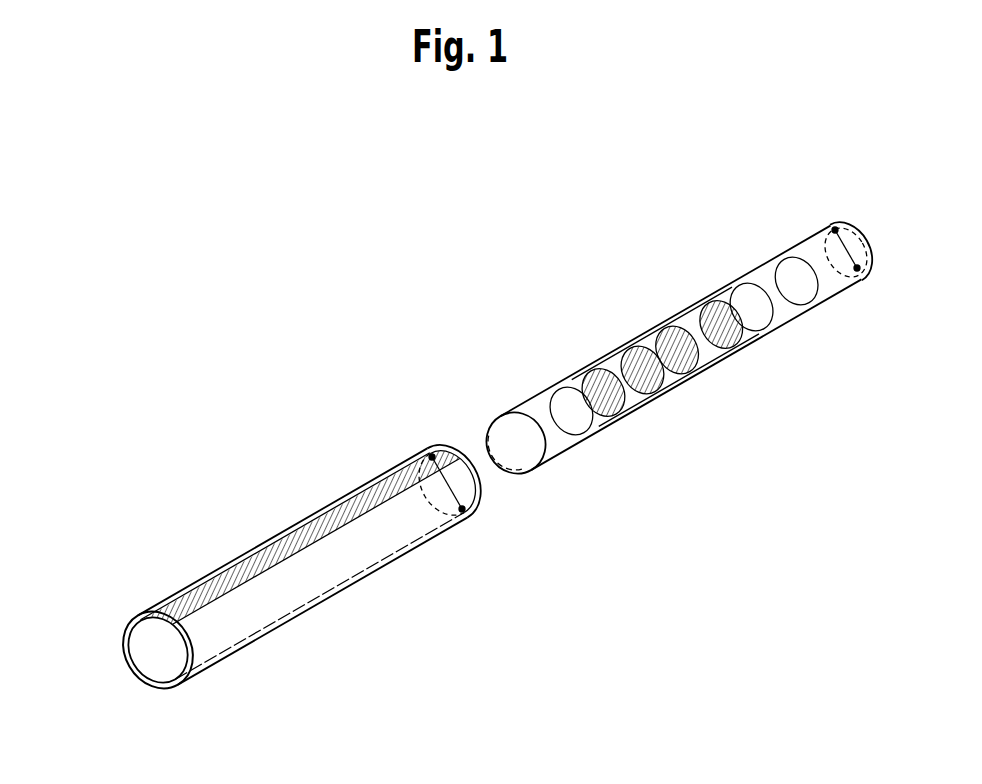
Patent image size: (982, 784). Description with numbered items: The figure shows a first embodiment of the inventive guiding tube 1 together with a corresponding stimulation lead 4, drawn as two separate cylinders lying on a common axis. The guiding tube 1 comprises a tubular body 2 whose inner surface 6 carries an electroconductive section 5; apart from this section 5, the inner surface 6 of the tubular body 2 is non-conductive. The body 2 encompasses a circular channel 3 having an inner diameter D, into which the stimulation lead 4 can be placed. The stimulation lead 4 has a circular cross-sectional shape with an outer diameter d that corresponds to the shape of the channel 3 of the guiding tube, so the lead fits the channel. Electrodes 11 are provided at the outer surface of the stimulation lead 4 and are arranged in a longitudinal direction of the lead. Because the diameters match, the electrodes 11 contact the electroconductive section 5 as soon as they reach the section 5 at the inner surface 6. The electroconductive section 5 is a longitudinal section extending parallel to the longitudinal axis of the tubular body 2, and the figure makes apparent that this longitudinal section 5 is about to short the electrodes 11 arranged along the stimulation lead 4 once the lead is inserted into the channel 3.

The guiding tube 1 is at (314, 606).
The tubular body 2 is at (380, 533).
The circular channel 3 is at (163, 638).
The stimulation lead 4 is at (803, 250).
The electroconductive section 5 is at (283, 550).
The inner surface 6 is at (183, 648).
The electrodes 11 is at (585, 400).
The inner diameter D is at (460, 477).
The outer diameter d is at (842, 280).